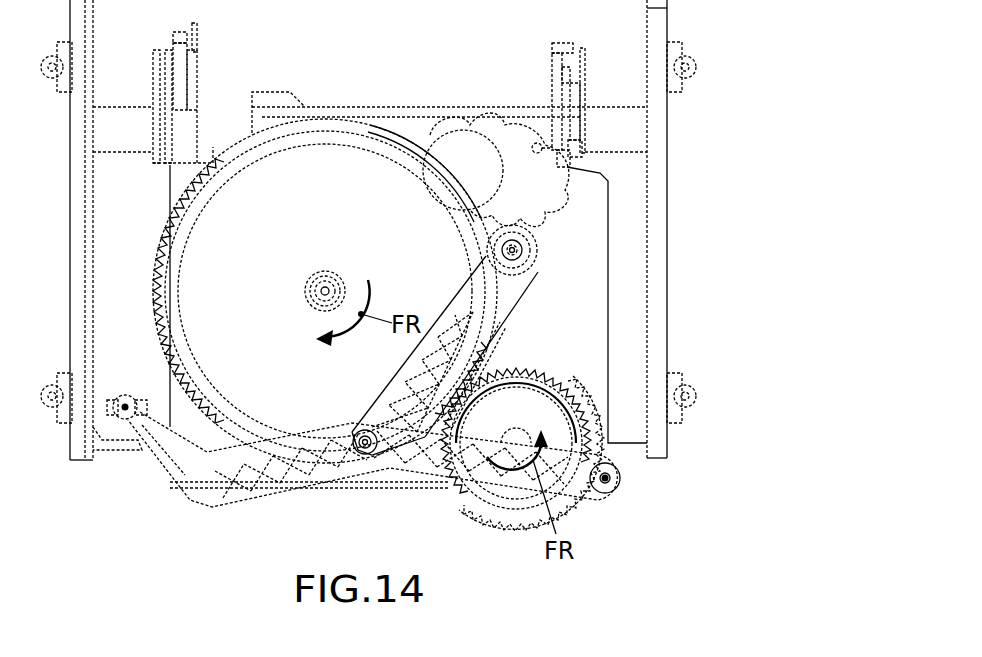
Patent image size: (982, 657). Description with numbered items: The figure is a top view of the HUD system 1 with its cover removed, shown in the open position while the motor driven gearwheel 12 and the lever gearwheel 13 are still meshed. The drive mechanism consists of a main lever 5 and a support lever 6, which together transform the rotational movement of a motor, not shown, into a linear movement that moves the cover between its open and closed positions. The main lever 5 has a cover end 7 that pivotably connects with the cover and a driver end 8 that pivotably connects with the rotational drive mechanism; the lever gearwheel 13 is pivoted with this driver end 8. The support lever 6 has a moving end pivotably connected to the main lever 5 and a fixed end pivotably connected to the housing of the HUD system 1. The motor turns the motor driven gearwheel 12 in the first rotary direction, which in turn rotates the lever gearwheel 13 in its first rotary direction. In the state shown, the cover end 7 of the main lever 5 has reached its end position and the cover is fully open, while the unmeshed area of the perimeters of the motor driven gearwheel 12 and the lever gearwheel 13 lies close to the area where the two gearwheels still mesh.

The HUD system 1 is at (736, 65).
The main lever 5 is at (300, 457).
The support lever 6 is at (481, 288).
The cover end 7 is at (125, 407).
The driver end 8 is at (607, 480).
The motor driven gearwheel 12 is at (293, 163).
The lever gearwheel 13 is at (500, 493).